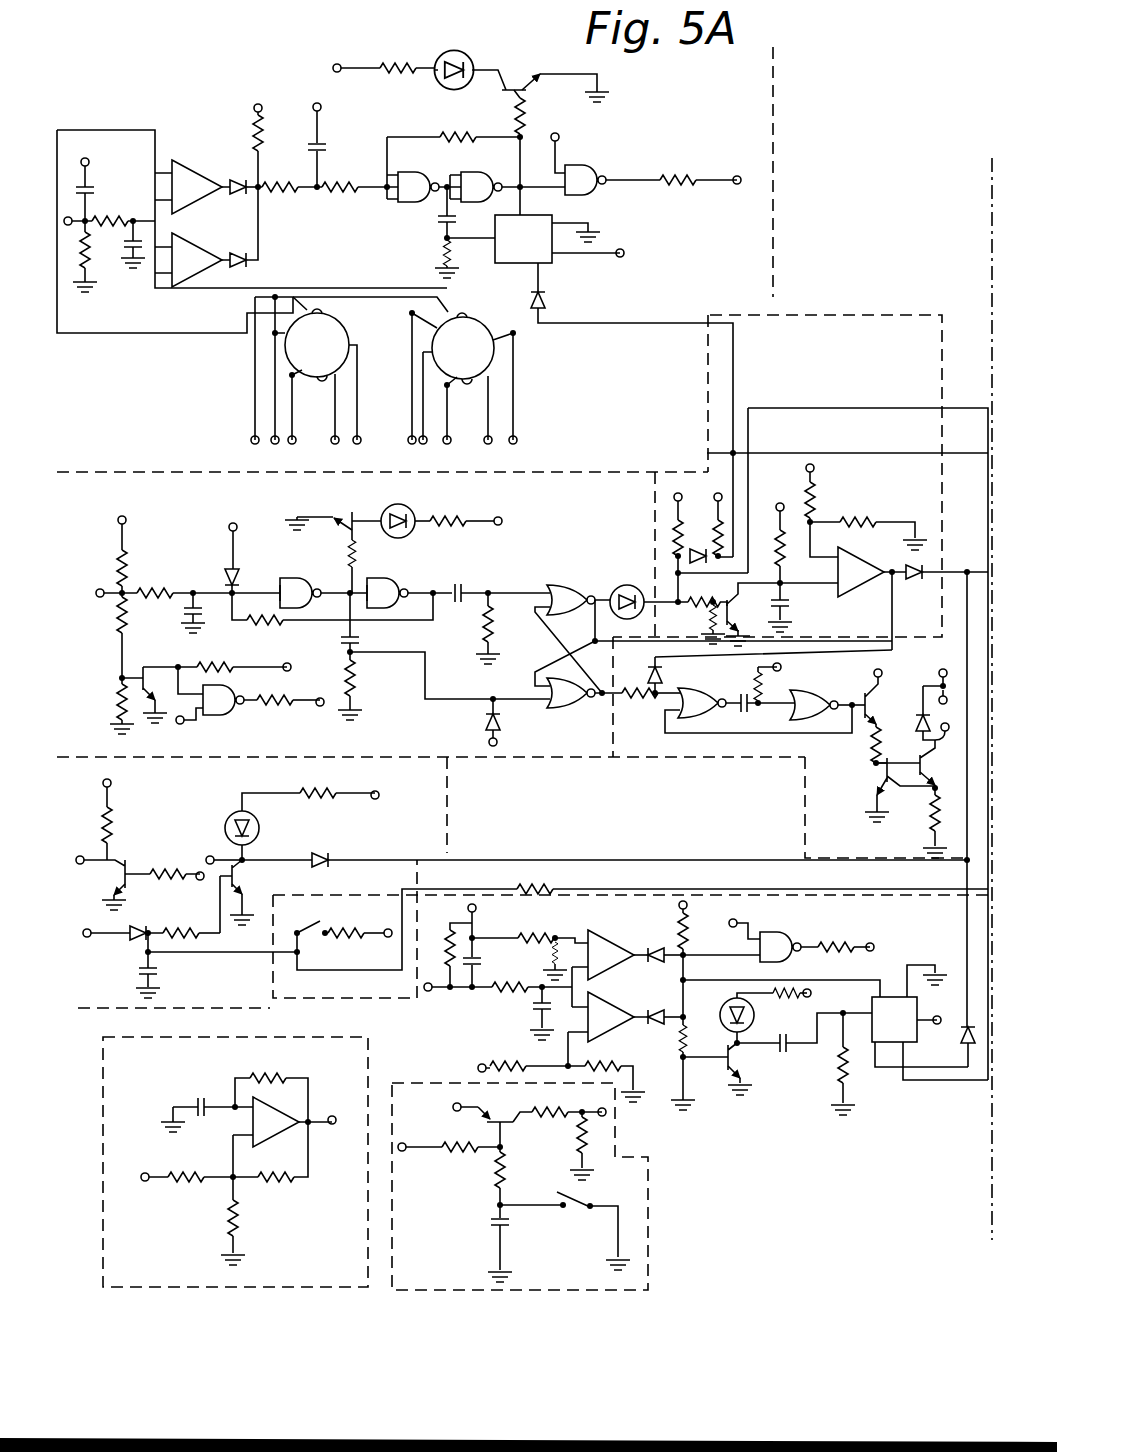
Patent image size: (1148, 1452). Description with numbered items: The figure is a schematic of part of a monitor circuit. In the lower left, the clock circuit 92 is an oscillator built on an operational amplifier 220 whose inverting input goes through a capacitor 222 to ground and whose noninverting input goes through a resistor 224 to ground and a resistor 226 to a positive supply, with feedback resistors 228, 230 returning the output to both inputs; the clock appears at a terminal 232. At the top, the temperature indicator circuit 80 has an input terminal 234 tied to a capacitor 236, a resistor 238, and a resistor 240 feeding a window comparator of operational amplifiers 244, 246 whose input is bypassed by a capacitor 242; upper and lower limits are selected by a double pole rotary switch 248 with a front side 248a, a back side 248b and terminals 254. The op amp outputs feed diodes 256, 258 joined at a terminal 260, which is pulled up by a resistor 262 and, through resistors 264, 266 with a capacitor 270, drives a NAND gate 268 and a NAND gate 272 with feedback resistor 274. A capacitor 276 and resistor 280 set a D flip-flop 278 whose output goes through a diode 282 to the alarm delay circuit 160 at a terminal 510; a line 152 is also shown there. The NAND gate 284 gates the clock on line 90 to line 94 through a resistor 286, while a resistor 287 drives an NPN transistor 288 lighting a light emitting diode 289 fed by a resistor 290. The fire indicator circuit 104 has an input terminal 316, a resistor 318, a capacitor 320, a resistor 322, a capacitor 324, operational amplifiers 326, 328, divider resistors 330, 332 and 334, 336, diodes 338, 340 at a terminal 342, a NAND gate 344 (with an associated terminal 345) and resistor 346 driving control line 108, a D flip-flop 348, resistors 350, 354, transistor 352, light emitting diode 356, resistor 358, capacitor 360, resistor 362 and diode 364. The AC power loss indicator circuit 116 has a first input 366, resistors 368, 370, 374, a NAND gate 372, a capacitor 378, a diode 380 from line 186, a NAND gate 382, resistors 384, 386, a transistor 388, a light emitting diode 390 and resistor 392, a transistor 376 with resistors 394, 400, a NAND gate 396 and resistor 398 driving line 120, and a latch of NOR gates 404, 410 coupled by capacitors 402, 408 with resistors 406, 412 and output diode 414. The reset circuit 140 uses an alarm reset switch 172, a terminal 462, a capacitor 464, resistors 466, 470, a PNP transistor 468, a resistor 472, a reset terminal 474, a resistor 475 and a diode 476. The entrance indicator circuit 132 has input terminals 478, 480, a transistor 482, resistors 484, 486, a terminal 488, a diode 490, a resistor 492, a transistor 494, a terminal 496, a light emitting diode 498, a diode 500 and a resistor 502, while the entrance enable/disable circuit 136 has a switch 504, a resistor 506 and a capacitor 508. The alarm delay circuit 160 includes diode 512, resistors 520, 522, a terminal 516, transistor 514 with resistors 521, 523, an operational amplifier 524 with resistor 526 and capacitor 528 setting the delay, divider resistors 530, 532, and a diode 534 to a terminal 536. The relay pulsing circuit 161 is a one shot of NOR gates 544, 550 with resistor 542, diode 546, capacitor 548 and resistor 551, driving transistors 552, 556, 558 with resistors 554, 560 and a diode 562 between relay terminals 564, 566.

The temperature indicator circuit 80 is at (779, 179).
The line 90 is at (572, 172).
The clock circuit 92 is at (200, 1036).
The line 94 is at (702, 186).
The fire indicator circuit 104 is at (731, 1136).
The control line 108 is at (858, 942).
The AC power loss indicator circuit 116 is at (155, 468).
The line 120 is at (318, 732).
The entrance indicator circuit 132 is at (450, 813).
The entrance enable/disable circuit 136 is at (356, 1003).
The reset circuit 140 is at (649, 1238).
The conductor 152 is at (645, 325).
The alarm delay circuit 160 is at (871, 286).
The relay pulsing circuit 161 is at (742, 760).
The alarm reset switch 172 is at (568, 1222).
The line 186 is at (247, 518).
The operational amplifier 220 is at (282, 1111).
The capacitor 222 is at (198, 1098).
The resistor 224 is at (253, 1232).
The resistor 226 is at (185, 1165).
The feedback resistor 228 is at (270, 1085).
The feedback resistor 230 is at (270, 1164).
The terminal 232 is at (330, 1145).
The input terminal 234 is at (252, 248).
The capacitor 236 is at (92, 188).
The resistor 238 is at (98, 258).
The resistor 240 is at (109, 208).
The capacitor 242 is at (140, 262).
The operational amplifier 244 is at (192, 172).
The operational amplifier 246 is at (192, 249).
The double pole rotary switch 248 is at (341, 369).
The front side 248a is at (306, 369).
The back side 248b is at (405, 370).
The terminals 254 is at (246, 437).
The diode 256 is at (233, 171).
The diode 258 is at (236, 238).
The terminal 260 is at (260, 192).
The resistor 262 is at (252, 133).
The resistor 264 is at (287, 173).
The resistor 266 is at (357, 173).
The NAND gate 268 is at (419, 190).
The capacitor 270 is at (336, 136).
The NAND gate 272 is at (483, 172).
The resistor 274 is at (455, 123).
The capacitor 276 is at (471, 214).
The D flip-flop 278 is at (557, 225).
The resistor 280 is at (423, 259).
The diode 282 is at (632, 410).
The NAND gate 284 is at (588, 186).
The resistor 286 is at (698, 165).
The resistor 287 is at (544, 138).
The NPN transistor 288 is at (541, 70).
The light emitting diode 289 is at (461, 54).
The resistor 290 is at (363, 52).
The input terminal 316 is at (456, 1012).
The resistor 318 is at (410, 971).
The capacitor 320 is at (486, 944).
The resistor 322 is at (531, 991).
The capacitor 324 is at (518, 1014).
The operational amplifier 326 is at (615, 942).
The operational amplifier 328 is at (608, 1019).
The resistor 330 is at (530, 923).
The resistor 332 is at (539, 961).
The resistor 334 is at (516, 1056).
The resistor 336 is at (615, 1067).
The diode 338 is at (655, 940).
The diode 340 is at (660, 999).
The terminal 342 is at (716, 965).
The NAND gate 344 is at (750, 952).
The resistor 345 is at (705, 960).
The resistor 346 is at (836, 929).
The D flip-flop 348 is at (930, 1022).
The resistor 350 is at (666, 1067).
The NPN transistor 352 is at (730, 1069).
The resistor 354 is at (715, 1078).
The light emitting diode 356 is at (781, 1013).
The resistor 358 is at (808, 978).
The capacitor 360 is at (804, 1045).
The resistor 362 is at (862, 1064).
The diode 364 is at (963, 1050).
The first input 366 is at (103, 597).
The resistor 368 is at (130, 556).
The resistor 370 is at (208, 578).
The NAND gate 372 is at (323, 581).
The resistor 374 is at (144, 635).
The NPN transistor 376 is at (150, 680).
The capacitor 378 is at (212, 600).
The diode 380 is at (257, 566).
The NAND gate 382 is at (409, 580).
The resistor 384 is at (332, 623).
The resistor 386 is at (377, 563).
The NPN transistor 388 is at (333, 514).
The light emitting diode 390 is at (406, 506).
The resistor 392 is at (482, 506).
The resistor 394 is at (100, 704).
The NAND gate 396 is at (232, 707).
The resistor 398 is at (288, 689).
The resistor 400 is at (247, 655).
The capacitor 402 is at (377, 626).
The NOR gate 404 is at (486, 695).
The resistor 406 is at (372, 690).
The capacitor 408 is at (491, 578).
The NOR gate 410 is at (713, 624).
The resistor 412 is at (468, 628).
The diode 414 is at (641, 587).
The terminal 462 is at (505, 1211).
The capacitor 464 is at (473, 1243).
The resistor 466 is at (524, 1177).
The PNP transistor 468 is at (476, 1116).
The resistor 470 is at (445, 1135).
The resistor 472 is at (564, 1101).
The reset terminal 474 is at (910, 1092).
The resistor 475 is at (560, 1146).
The diode 476 is at (468, 720).
The input terminal 478 is at (104, 822).
The input terminal 480 is at (130, 938).
The NPN transistor 482 is at (94, 883).
The resistor 484 is at (126, 808).
The resistor 486 is at (162, 859).
The terminal 488 is at (199, 881).
The diode 490 is at (103, 982).
The resistor 492 is at (185, 920).
The NPN transistor 494 is at (253, 895).
The terminal 496 is at (212, 855).
The light emitting diode 498 is at (269, 826).
The diode 500 is at (604, 844).
The resistor 502 is at (352, 783).
The switch 504 is at (323, 926).
The resistor 506 is at (363, 938).
The capacitor 508 is at (216, 965).
The terminal 510 is at (730, 453).
The diode 512 is at (688, 553).
The NPN transistor 514 is at (782, 614).
The terminal 516 is at (702, 593).
The resistor 520 is at (714, 516).
The resistor 521 is at (703, 610).
The resistor 522 is at (672, 527).
The resistor 523 is at (705, 625).
The operational amplifier 524 is at (872, 586).
The resistor 526 is at (796, 534).
The capacitor 528 is at (806, 607).
The resistor 530 is at (815, 505).
The resistor 532 is at (862, 522).
The diode 534 is at (944, 589).
The terminal 536 is at (966, 568).
The resistor 542 is at (648, 705).
The NOR gate 544 is at (758, 694).
The diode 546 is at (752, 669).
The capacitor 548 is at (764, 678).
The NOR gate 550 is at (827, 693).
The resistor 551 is at (768, 715).
The NPN transistor 552 is at (888, 691).
The resistor 554 is at (867, 746).
The NPN transistor 556 is at (946, 767).
The transistor 558 is at (882, 790).
The resistor 560 is at (917, 826).
The diode 562 is at (908, 713).
The terminal 564 is at (941, 677).
The terminal 566 is at (954, 740).